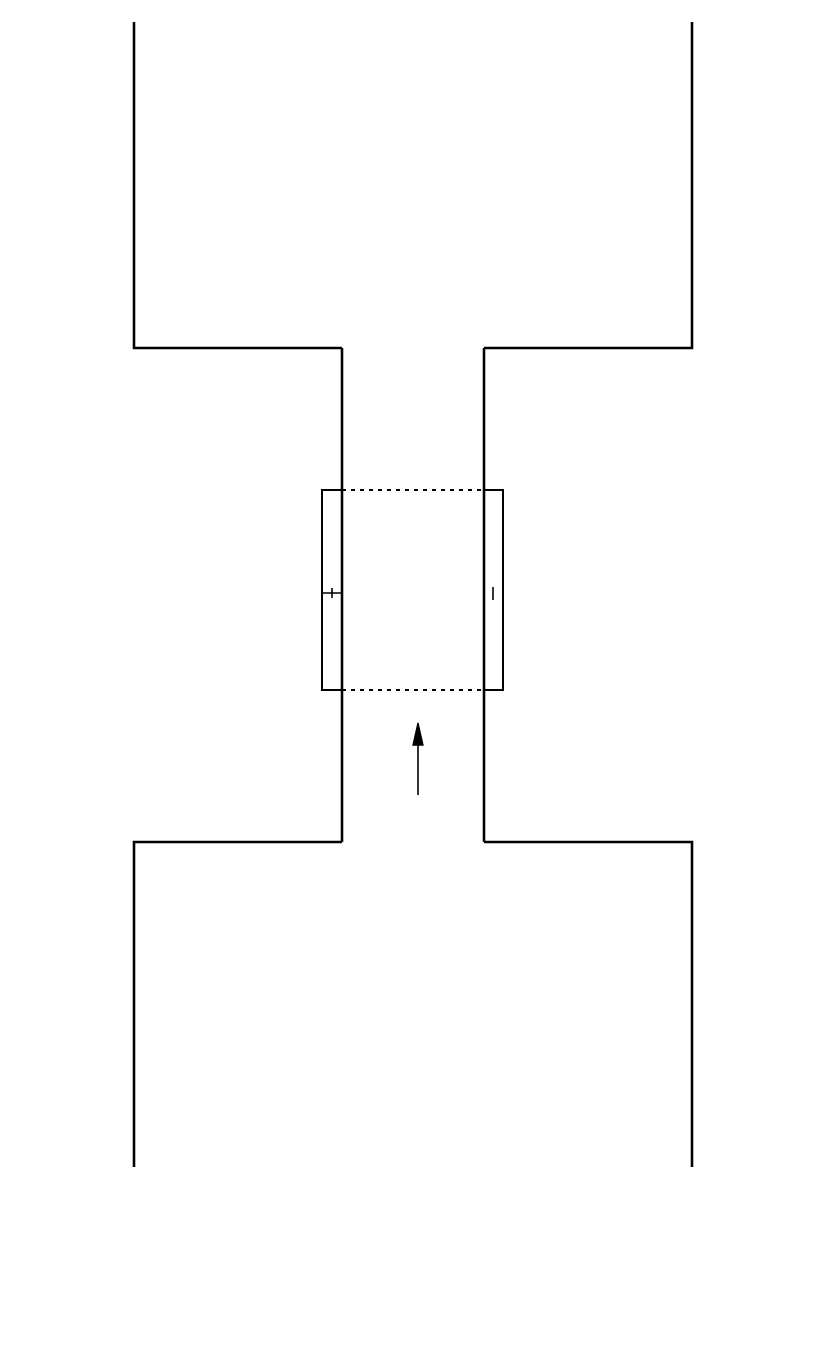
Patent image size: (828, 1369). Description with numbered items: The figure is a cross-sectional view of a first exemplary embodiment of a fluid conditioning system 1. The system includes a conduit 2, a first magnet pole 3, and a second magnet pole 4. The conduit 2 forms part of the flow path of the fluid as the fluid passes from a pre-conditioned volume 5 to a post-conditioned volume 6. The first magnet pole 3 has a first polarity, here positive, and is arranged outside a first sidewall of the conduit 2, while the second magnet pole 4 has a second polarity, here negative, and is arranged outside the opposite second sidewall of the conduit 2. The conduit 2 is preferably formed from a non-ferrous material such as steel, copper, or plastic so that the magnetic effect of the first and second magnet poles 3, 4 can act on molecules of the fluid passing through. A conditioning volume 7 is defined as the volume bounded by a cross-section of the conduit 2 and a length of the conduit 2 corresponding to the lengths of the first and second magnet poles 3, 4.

The fluid conditioning system 1 is at (143, 513).
The conduit 2 is at (422, 393).
The first magnet pole 3 is at (322, 513).
The second magnet pole 4 is at (504, 510).
The pre-conditioned volume 5 is at (422, 988).
The post-conditioned volume 6 is at (422, 133).
The conditioning volume 7 is at (427, 580).